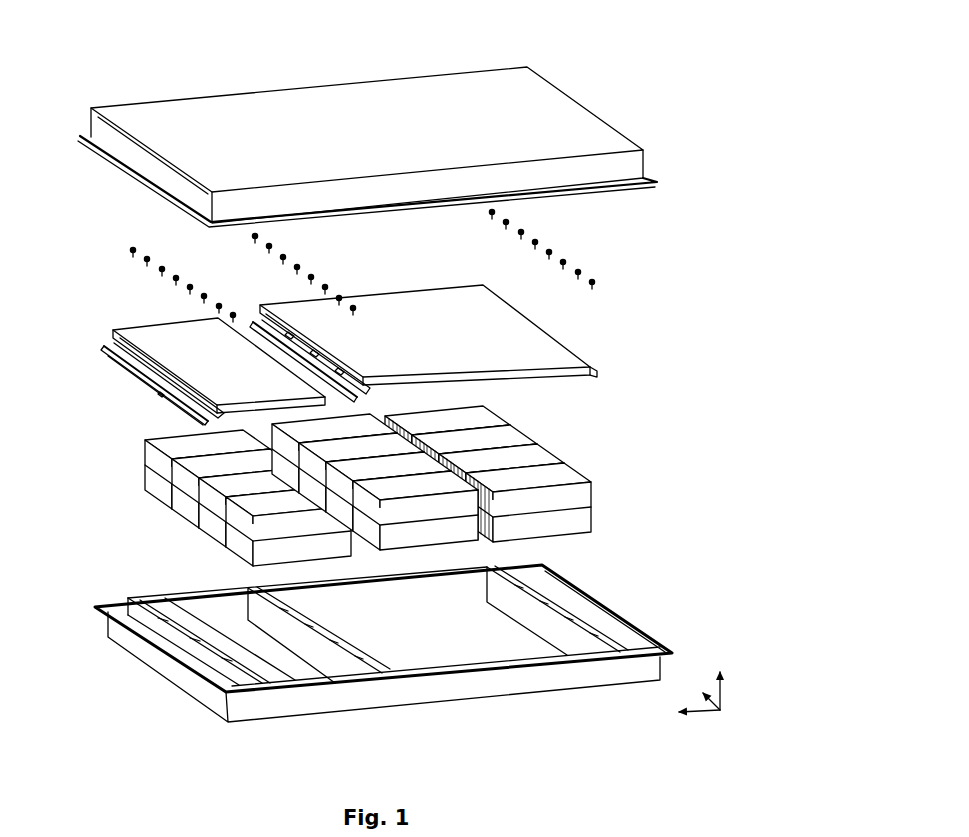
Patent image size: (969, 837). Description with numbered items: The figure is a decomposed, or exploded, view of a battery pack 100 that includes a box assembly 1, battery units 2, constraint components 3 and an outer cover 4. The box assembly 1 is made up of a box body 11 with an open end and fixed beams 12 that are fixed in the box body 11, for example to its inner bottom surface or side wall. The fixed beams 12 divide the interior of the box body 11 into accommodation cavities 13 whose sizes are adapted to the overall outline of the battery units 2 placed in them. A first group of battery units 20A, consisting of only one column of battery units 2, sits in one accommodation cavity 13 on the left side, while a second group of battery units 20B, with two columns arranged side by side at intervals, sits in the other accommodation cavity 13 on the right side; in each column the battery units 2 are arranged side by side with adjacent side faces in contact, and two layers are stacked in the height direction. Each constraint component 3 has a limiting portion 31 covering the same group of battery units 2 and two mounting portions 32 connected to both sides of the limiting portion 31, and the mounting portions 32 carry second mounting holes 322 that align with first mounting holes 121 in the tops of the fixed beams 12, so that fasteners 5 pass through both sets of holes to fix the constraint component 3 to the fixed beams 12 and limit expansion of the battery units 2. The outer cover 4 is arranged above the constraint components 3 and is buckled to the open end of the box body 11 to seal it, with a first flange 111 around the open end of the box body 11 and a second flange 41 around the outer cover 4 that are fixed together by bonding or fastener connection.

The battery pack 100 is at (385, 24).
The outer cover 4 is at (346, 127).
The second flange 41 is at (112, 163).
The fastener 5 is at (568, 262).
The constraint component 3 is at (356, 367).
The limiting portion 31 is at (150, 342).
The mounting portion 32 is at (148, 362).
The second mounting hole 322 is at (175, 404).
The battery unit 2 is at (349, 475).
The first group of battery units 20A is at (143, 490).
The second group of battery units 20B is at (376, 413).
The box assembly 1 is at (371, 658).
The box body 11 is at (410, 693).
The first flange 111 is at (170, 656).
The fixed beam 12 is at (345, 662).
The first mounting hole 121 is at (575, 618).
The accommodation cavity 13 is at (222, 640).